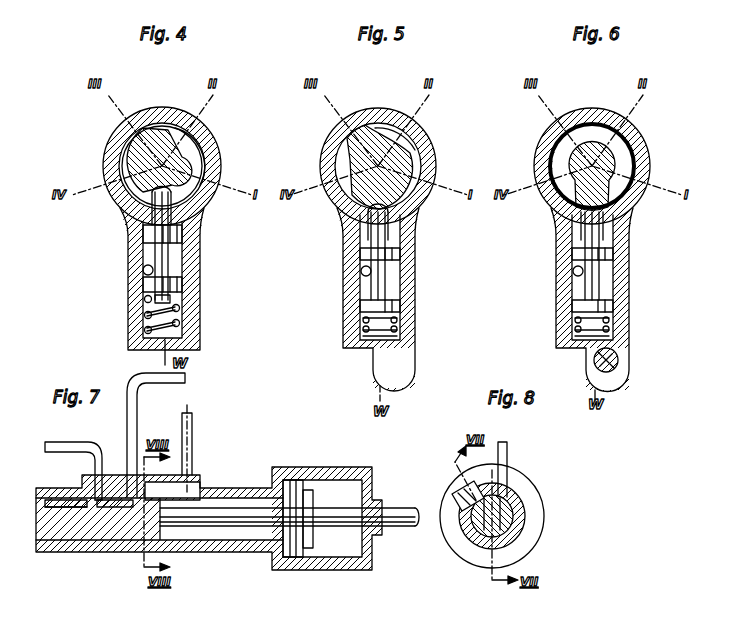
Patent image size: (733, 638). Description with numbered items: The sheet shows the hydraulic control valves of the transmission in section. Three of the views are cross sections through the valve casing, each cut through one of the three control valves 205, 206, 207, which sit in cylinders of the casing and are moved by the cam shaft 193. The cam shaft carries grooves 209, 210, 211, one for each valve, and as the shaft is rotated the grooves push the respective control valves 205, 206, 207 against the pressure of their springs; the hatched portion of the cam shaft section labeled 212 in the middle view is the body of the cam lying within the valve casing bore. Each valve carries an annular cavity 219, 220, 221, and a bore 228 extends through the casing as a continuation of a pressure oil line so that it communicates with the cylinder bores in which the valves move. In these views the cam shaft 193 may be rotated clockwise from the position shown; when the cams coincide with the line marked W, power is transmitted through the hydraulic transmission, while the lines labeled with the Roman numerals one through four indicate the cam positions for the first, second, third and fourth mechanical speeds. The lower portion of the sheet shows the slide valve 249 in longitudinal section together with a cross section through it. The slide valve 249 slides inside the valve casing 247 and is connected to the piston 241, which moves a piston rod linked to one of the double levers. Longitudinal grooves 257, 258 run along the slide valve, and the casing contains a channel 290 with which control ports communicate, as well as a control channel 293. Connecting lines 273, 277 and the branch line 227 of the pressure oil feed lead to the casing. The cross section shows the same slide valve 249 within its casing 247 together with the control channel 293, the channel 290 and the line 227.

In FIG. 4, the cam shaft 193 is at (135, 150).
In FIG. 4, the groove 209 is at (200, 152).
In FIG. 4, the control valve 205 is at (155, 215).
In FIG. 4, the annular cavity 219 is at (158, 256).
In FIG. 4, the bore 228 is at (145, 271).
In FIG. 5, the bore 228 is at (362, 274).
In FIG. 6, the bore 228 is at (575, 275).
In FIG. 5, the rotary valve member 212 is at (347, 162).
In FIG. 5, the groove 210 is at (410, 150).
In FIG. 5, the control valve 206 is at (383, 228).
In FIG. 5, the annular cavity 220 is at (385, 278).
In FIG. 6, the groove 211 is at (620, 160).
In FIG. 6, the control valve 207 is at (597, 225).
In FIG. 6, the annular cavity 221 is at (595, 280).
In FIG. 7, the connecting line 277 is at (172, 380).
In FIG. 7, the connecting line 273 is at (58, 442).
In FIG. 7, the longitudinal groove 258 is at (108, 497).
In FIG. 7, the line 227 is at (195, 428).
In FIG. 8, the line 227 is at (506, 452).
In FIG. 7, the control channel 293 is at (178, 490).
In FIG. 8, the control channel 293 is at (465, 492).
In FIG. 7, the longitudinal groove 257 is at (52, 497).
In FIG. 7, the slide valve 249 is at (245, 505).
In FIG. 7, the piston 241 is at (298, 500).
In FIG. 7, the valve casing 247 is at (118, 545).
In FIG. 8, the channel 290 is at (507, 490).